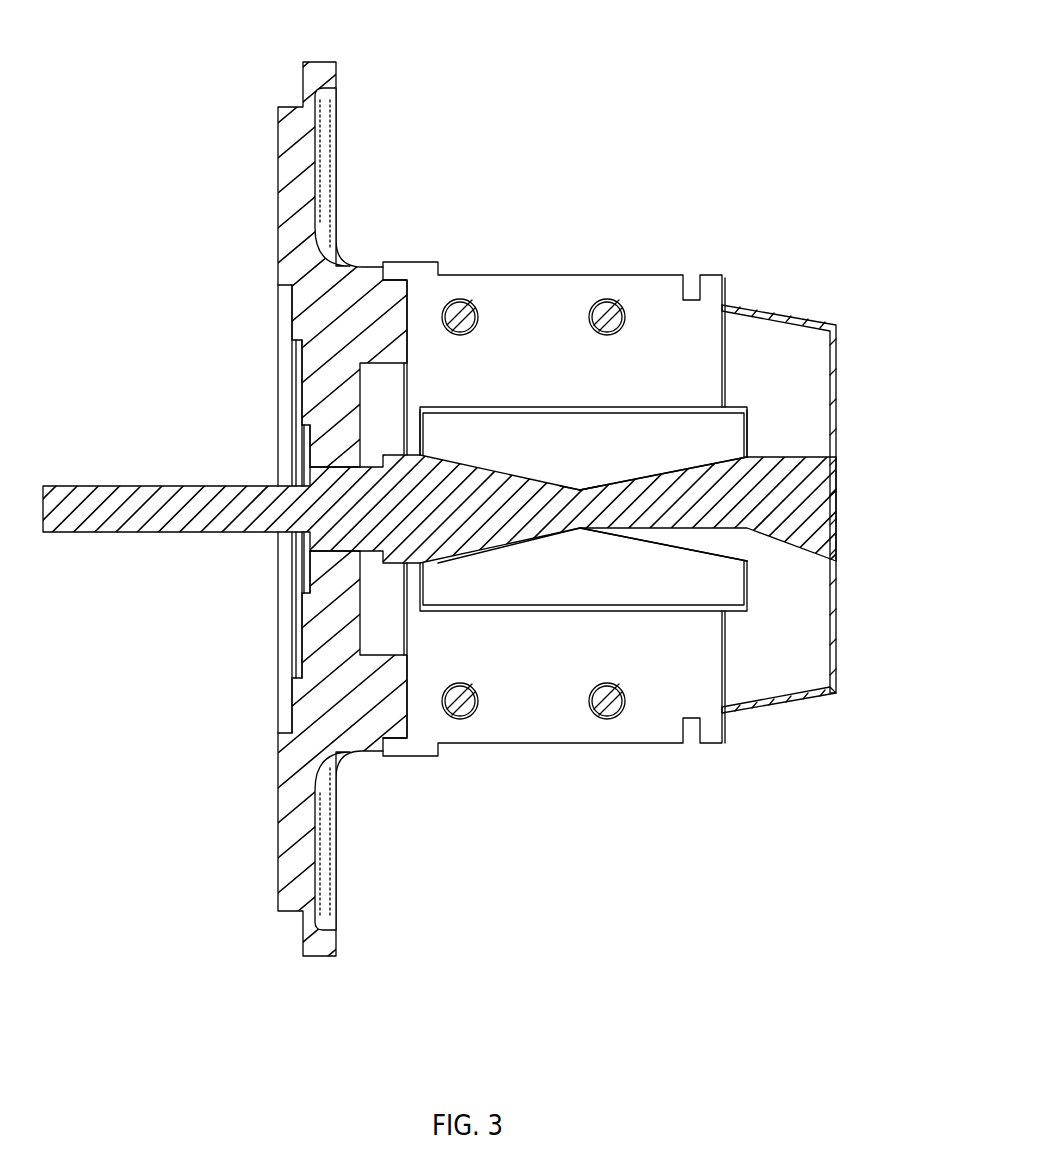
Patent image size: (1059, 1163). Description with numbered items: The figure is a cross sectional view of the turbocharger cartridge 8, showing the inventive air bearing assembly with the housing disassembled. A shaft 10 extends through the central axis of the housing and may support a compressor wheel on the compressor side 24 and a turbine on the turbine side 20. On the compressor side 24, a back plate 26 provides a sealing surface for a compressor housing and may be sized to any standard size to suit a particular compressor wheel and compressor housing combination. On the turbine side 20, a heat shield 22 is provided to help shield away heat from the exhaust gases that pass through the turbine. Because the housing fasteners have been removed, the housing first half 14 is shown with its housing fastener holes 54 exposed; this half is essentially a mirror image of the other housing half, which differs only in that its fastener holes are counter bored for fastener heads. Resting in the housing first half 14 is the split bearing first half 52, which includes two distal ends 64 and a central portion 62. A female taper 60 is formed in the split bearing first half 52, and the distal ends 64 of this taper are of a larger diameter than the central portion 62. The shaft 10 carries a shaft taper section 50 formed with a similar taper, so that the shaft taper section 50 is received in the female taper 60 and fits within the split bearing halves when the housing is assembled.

The turbocharger cartridge 8 is at (604, 91).
The shaft 10 is at (143, 486).
The housing first half 14 is at (657, 288).
The turbine side 20 is at (846, 407).
The heat shield 22 is at (825, 645).
The compressor side 24 is at (194, 596).
The back plate 26 is at (310, 170).
The shaft taper section 50 is at (747, 563).
The split bearing first half 52 is at (522, 435).
The housing fastener holes 54 is at (588, 708).
The female taper 60 is at (634, 477).
The central portion 62 is at (582, 490).
The distal ends 64 is at (423, 450).